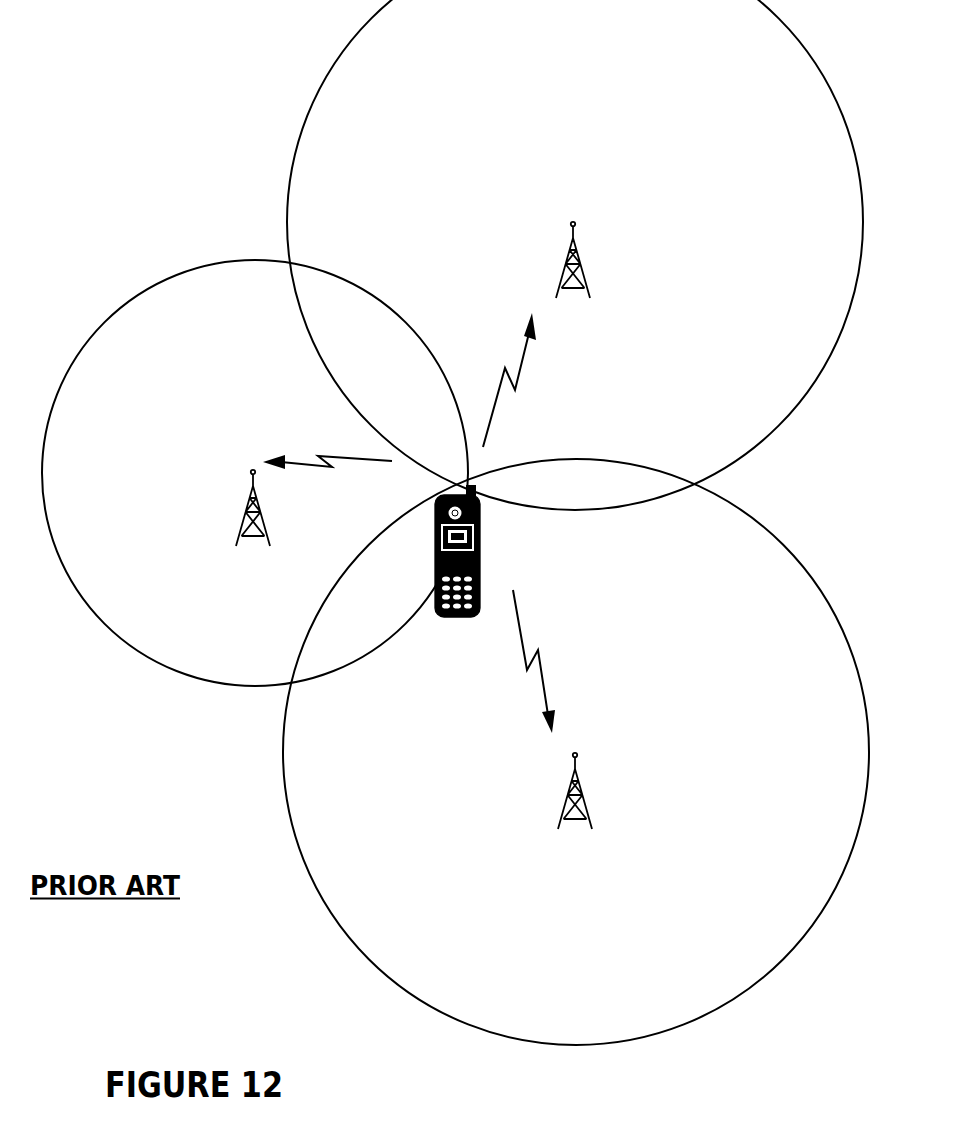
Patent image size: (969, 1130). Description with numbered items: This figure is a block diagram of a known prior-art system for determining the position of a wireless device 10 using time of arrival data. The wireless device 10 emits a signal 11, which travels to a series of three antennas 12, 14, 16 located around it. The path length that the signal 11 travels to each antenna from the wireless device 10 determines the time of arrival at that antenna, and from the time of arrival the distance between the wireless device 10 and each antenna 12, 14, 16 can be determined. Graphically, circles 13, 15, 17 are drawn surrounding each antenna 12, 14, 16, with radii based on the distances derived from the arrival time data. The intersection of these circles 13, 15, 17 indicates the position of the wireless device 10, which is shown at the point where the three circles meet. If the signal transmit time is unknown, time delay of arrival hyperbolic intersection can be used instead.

The wireless device 10 is at (474, 551).
The signal 11 is at (419, 523).
The antenna 12 is at (587, 260).
The circle 13 is at (586, 255).
The antenna 14 is at (244, 508).
The circle 15 is at (255, 459).
The antenna 16 is at (590, 791).
The circle 17 is at (581, 752).